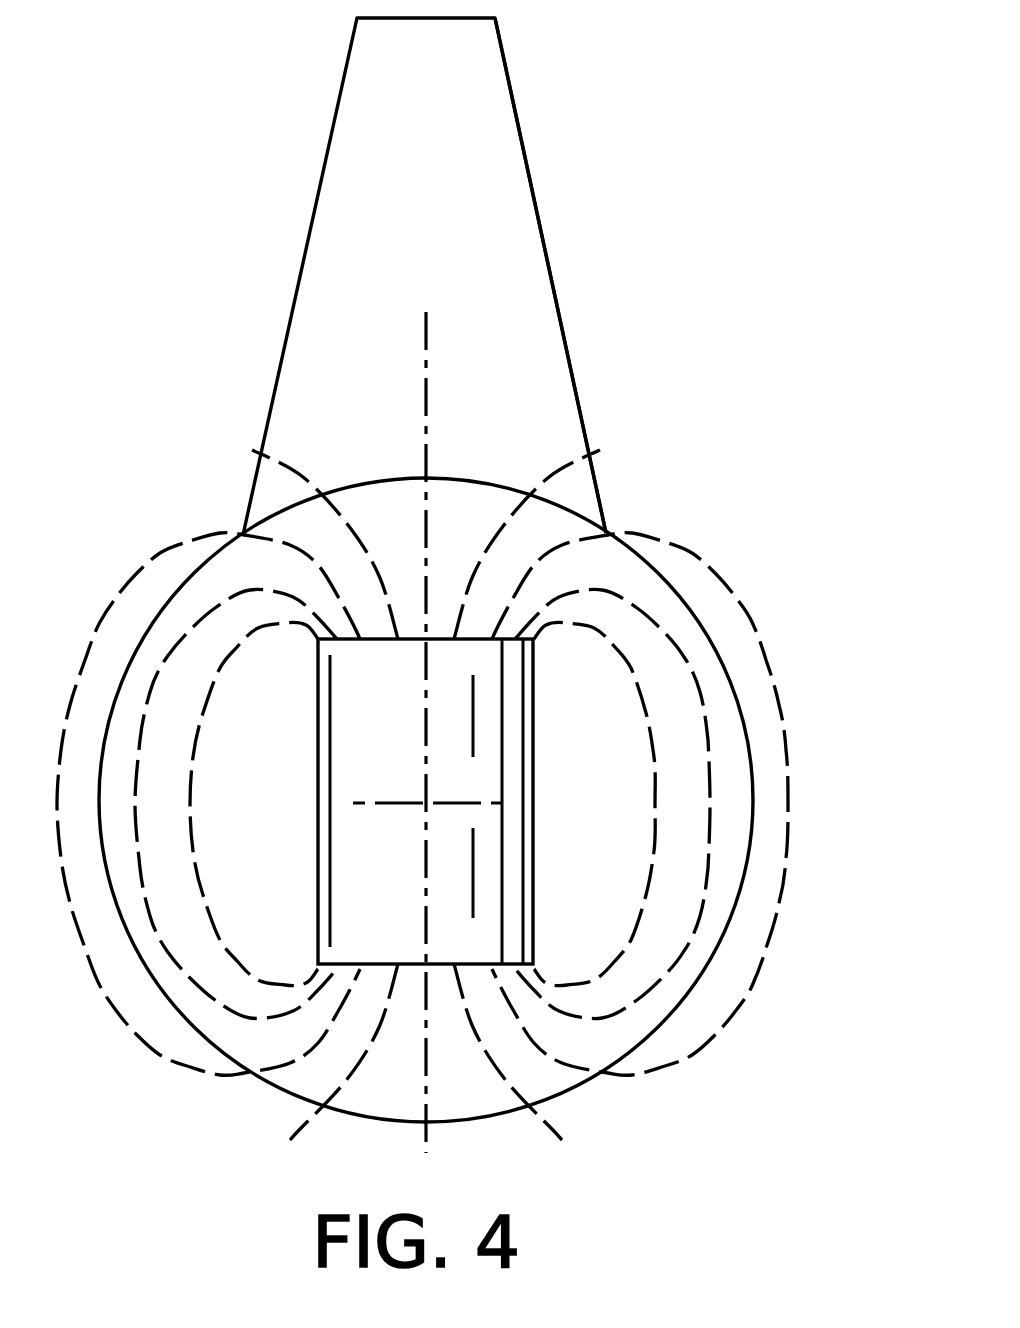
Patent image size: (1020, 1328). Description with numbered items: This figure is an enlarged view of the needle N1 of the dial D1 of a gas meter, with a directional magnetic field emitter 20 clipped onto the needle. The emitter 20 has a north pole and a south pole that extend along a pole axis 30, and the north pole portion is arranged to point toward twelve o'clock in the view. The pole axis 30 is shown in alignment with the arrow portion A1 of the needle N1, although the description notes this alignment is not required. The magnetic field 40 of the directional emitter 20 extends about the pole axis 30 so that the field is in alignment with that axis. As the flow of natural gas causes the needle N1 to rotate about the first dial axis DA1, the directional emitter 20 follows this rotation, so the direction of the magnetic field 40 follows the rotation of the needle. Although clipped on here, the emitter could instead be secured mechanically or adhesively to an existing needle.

The directional magnetic field emitter 20 is at (513, 883).
The pole axis 30 is at (427, 440).
The magnetic field 40 is at (770, 662).
The arrow portion A1 is at (342, 237).
The needle N1 is at (557, 298).
The dial D1 is at (752, 512).
The first dial axis DA1 is at (427, 803).